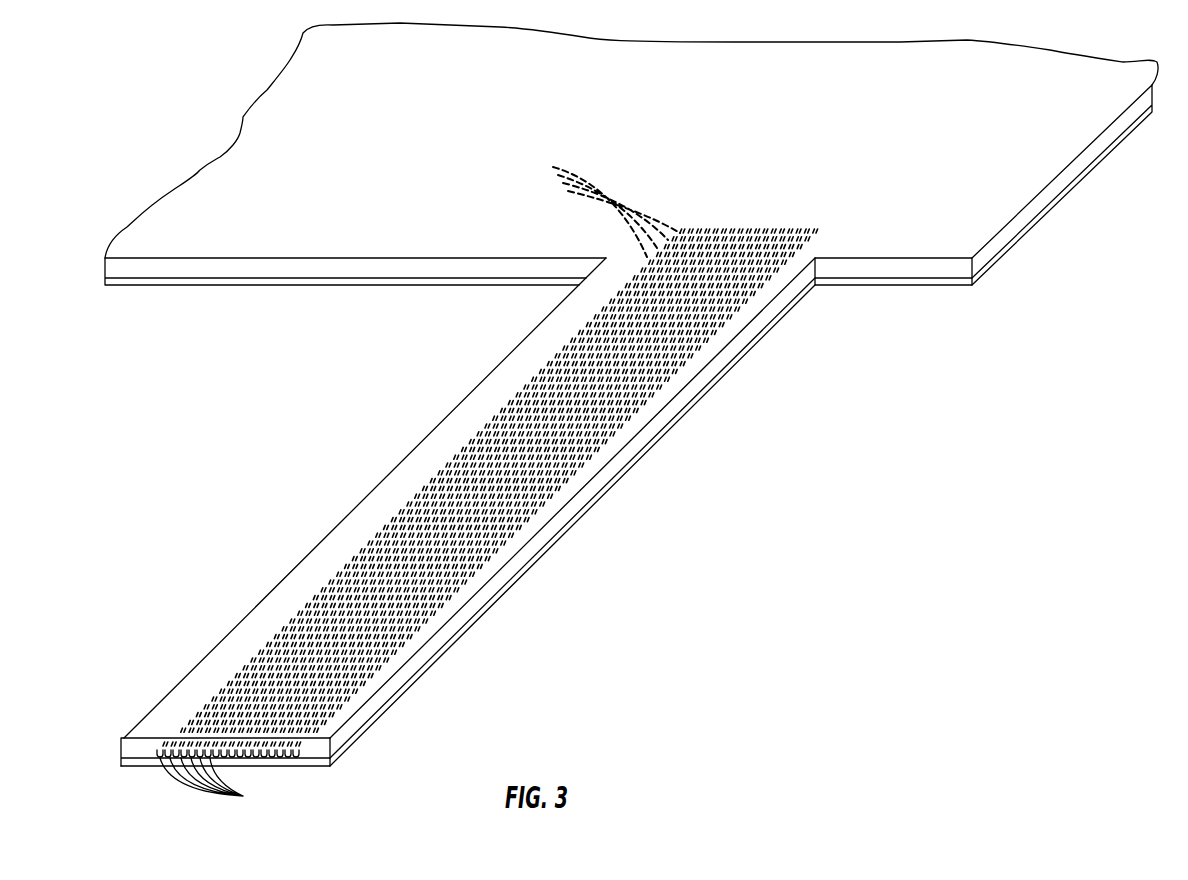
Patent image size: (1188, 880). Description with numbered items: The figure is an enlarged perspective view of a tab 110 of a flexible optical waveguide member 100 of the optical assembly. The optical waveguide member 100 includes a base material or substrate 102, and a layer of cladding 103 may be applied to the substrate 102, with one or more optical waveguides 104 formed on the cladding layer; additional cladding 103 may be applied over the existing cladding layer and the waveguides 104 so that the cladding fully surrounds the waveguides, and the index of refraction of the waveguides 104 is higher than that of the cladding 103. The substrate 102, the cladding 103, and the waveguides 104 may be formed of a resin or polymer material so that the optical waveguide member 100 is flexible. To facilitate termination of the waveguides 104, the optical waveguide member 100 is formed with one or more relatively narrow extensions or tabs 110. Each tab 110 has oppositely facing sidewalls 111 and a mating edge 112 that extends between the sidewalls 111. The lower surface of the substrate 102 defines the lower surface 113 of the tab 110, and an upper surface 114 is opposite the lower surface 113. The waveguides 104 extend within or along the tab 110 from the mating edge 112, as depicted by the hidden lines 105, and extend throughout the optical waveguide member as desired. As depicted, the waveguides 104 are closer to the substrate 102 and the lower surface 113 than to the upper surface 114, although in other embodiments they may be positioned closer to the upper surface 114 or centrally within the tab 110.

The flexible optical waveguide member 100 is at (1017, 215).
The substrate 102 is at (470, 622).
The cladding 103 is at (567, 513).
The optical waveguides 104 is at (228, 782).
The hidden lines 105 is at (596, 201).
The tab 110 is at (768, 318).
The sidewalls 111 is at (517, 563).
The mating edge 112 is at (140, 755).
The lower surface 113 is at (410, 687).
The upper surface 114 is at (237, 632).